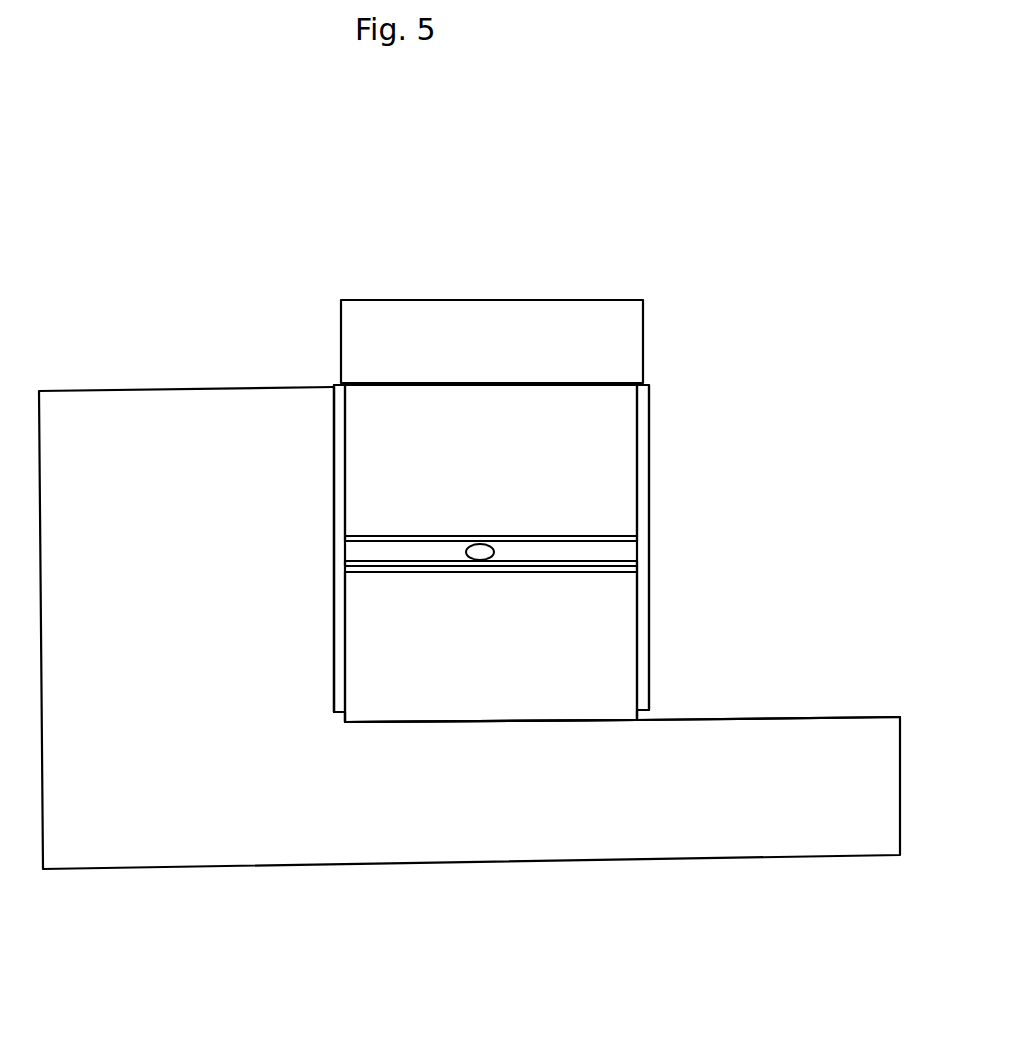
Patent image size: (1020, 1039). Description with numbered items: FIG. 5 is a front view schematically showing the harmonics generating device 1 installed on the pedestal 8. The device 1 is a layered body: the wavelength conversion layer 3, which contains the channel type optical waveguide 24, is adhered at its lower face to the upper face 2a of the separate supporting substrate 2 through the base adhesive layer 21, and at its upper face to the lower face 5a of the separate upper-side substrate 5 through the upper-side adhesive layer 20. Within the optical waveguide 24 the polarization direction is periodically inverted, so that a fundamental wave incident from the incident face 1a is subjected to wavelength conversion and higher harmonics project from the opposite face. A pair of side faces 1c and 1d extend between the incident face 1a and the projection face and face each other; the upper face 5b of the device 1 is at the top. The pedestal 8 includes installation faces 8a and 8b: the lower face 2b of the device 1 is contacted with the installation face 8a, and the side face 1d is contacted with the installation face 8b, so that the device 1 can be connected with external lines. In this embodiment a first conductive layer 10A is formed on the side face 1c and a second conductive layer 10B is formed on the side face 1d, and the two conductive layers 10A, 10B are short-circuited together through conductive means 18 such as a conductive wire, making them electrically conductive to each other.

The harmonics generating device 1 is at (665, 382).
The incident face 1a is at (513, 392).
The side face 1c is at (640, 495).
The side face 1d is at (343, 622).
The supporting substrate 2 is at (612, 635).
The upper face of supporting substrate 2a is at (420, 570).
The lower face of device 2b is at (566, 720).
The wavelength conversion layer 3 is at (622, 550).
The upper-side substrate 5 is at (618, 447).
The lower face of upper-side substrate 5a is at (572, 547).
The upper face of device 5b is at (440, 385).
The pedestal 8 is at (168, 400).
The installation face 8a is at (710, 717).
The installation face 8b is at (335, 499).
The first conductive layer 10A is at (650, 408).
The second conductive layer 10B is at (338, 410).
The conductive means 18 is at (645, 315).
The upper-side adhesive layer 20 is at (365, 538).
The base adhesive layer 21 is at (385, 572).
The channel type optical waveguide 24 is at (483, 548).